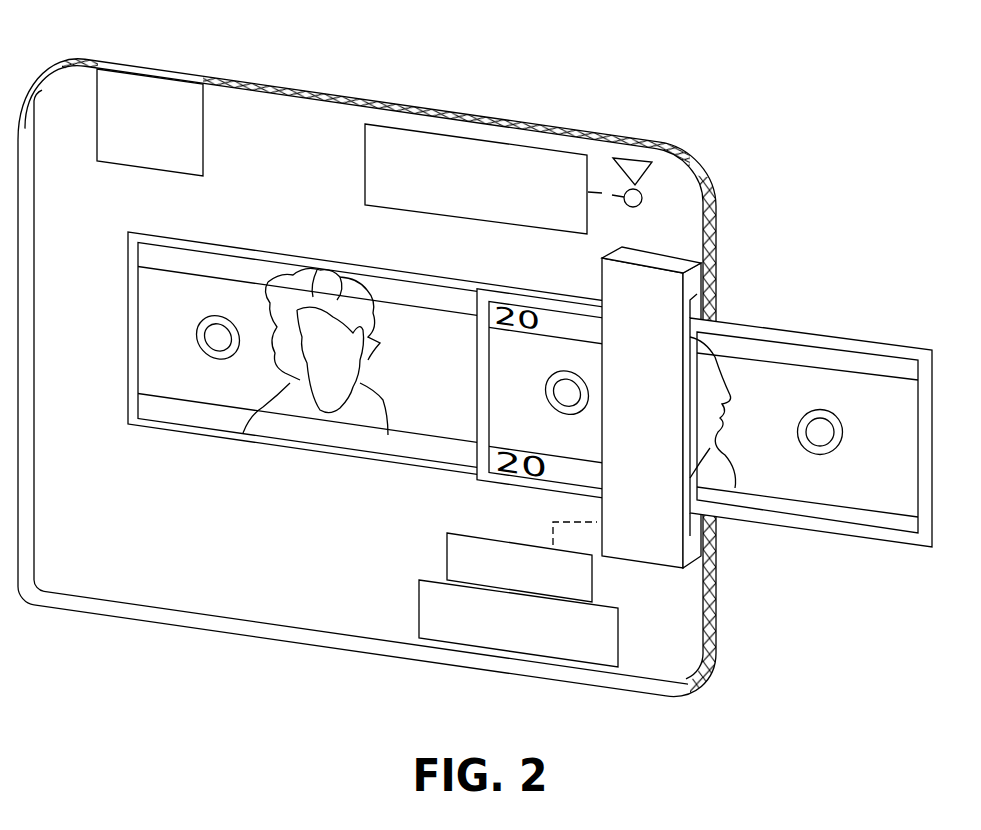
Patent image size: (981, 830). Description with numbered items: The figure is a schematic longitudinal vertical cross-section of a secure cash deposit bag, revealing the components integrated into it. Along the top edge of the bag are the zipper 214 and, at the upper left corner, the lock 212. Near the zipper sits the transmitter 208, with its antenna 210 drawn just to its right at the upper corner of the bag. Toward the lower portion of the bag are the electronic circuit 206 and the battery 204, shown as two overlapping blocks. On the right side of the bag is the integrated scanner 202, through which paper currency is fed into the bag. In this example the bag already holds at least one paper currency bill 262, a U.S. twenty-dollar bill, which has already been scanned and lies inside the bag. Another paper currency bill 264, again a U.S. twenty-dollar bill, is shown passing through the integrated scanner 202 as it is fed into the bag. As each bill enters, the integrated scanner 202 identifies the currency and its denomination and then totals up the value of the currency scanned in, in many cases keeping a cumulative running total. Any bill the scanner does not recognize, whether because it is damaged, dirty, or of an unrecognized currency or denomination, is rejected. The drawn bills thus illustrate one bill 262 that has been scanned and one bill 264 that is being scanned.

The lock 212 is at (160, 71).
The zipper 214 is at (578, 134).
The transmitter 208 is at (492, 138).
The antenna 210 is at (638, 160).
The paper currency bill 262 is at (230, 247).
The integrated scanner 202 is at (657, 300).
The paper currency bill 264 is at (843, 341).
The electronic circuit 206 is at (582, 578).
The battery 204 is at (602, 637).